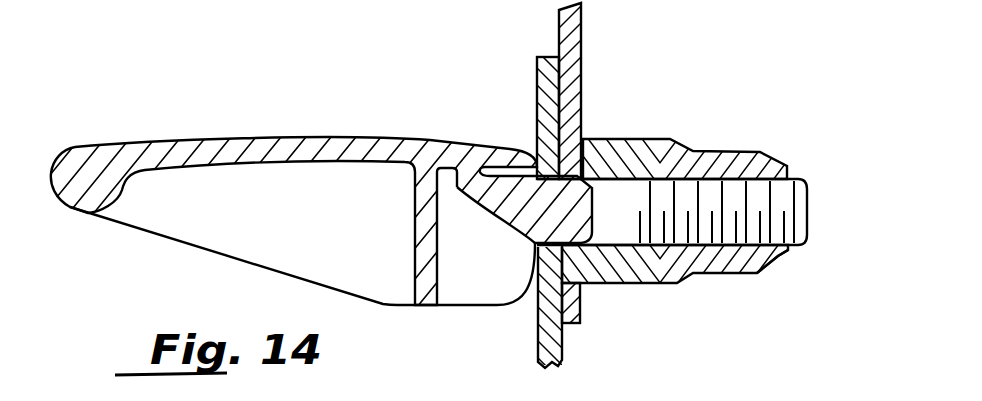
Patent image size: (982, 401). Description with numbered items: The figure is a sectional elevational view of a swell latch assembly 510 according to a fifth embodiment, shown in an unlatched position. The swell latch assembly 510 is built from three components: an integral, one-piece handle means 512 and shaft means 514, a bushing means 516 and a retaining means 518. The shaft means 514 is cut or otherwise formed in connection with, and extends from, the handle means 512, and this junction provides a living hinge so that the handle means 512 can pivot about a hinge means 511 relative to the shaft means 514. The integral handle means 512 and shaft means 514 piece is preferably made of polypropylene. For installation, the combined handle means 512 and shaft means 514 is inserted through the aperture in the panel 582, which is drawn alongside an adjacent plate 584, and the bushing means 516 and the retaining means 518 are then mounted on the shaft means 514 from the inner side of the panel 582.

The swell latch assembly 510 is at (700, 107).
The hinge means 511 is at (488, 186).
The handle means 512 is at (263, 147).
The shaft means 514 is at (690, 200).
The bushing means 516 is at (633, 270).
The retaining means 518 is at (763, 255).
The panel 582 is at (537, 61).
The mounting plate 584 is at (572, 73).